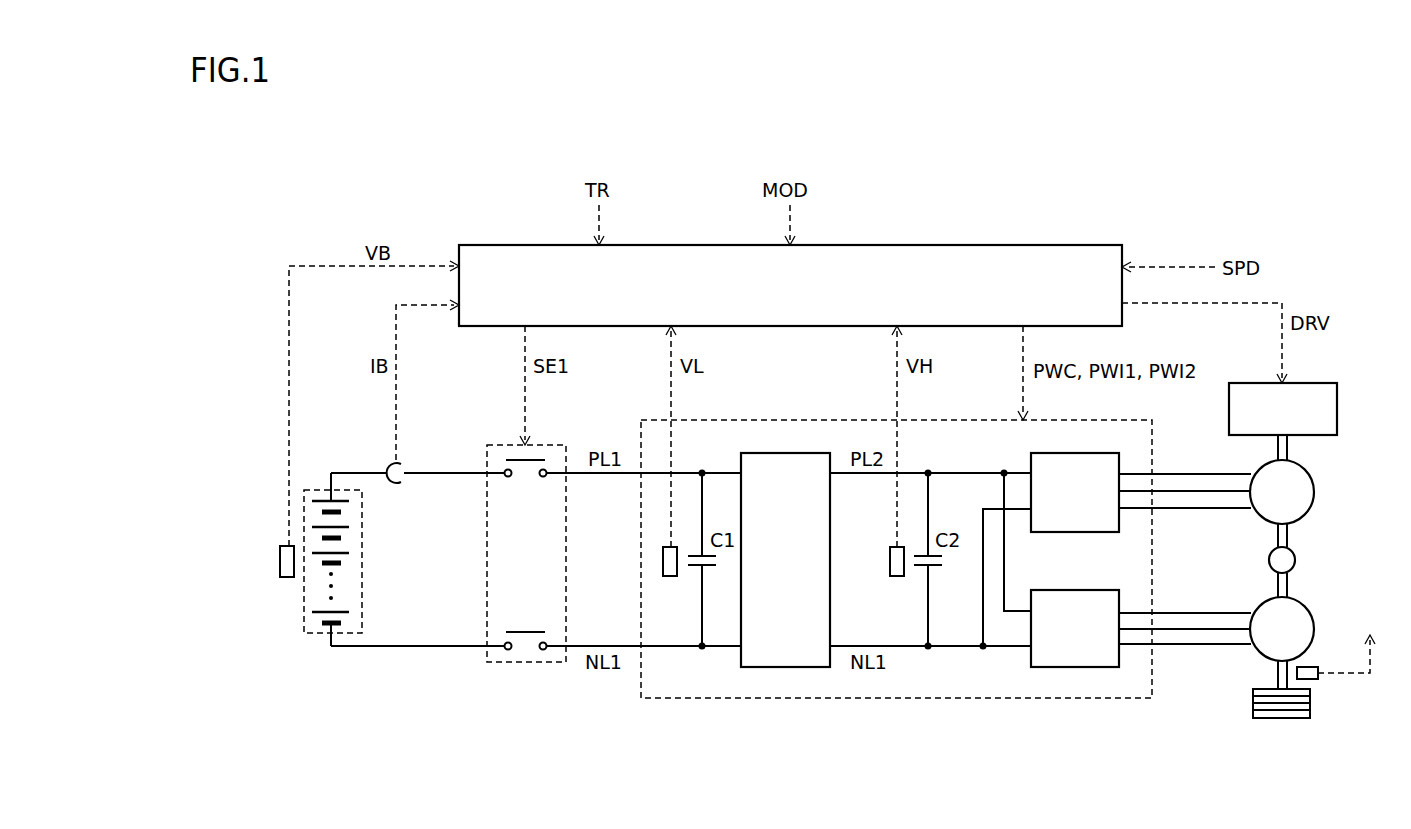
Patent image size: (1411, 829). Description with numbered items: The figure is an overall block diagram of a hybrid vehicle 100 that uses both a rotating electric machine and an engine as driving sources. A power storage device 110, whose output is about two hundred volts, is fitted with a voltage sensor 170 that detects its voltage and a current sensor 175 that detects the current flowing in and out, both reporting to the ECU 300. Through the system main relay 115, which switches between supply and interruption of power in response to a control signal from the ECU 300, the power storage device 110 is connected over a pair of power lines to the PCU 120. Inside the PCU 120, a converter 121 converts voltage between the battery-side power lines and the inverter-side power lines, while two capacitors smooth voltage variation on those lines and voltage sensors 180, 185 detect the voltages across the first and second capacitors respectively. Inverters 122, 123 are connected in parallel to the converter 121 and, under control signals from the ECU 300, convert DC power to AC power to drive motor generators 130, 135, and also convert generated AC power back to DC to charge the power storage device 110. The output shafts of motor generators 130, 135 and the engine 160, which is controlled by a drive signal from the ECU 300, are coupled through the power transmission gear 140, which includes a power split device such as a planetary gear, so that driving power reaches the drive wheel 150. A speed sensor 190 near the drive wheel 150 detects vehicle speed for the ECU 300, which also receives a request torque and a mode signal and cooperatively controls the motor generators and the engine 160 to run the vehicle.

The vehicle 100 is at (1369, 190).
The ECU 300 is at (1033, 246).
The engine 160 is at (1318, 383).
The power storage device 110 is at (318, 490).
The voltage sensor 170 is at (280, 565).
The current sensor 175 is at (399, 481).
The system main relay 115 is at (545, 447).
The PCU 120 is at (1117, 420).
The converter 121 is at (780, 453).
The inverter 122 is at (1073, 453).
The inverter 123 is at (1073, 590).
The voltage sensor 180 is at (669, 576).
The voltage sensor 185 is at (896, 576).
The motor generator 130 is at (1315, 490).
The motor generator 135 is at (1308, 600).
The power transmission gear 140 is at (1269, 564).
The drive wheel 150 is at (1289, 720).
The speed sensor 190 is at (1318, 680).